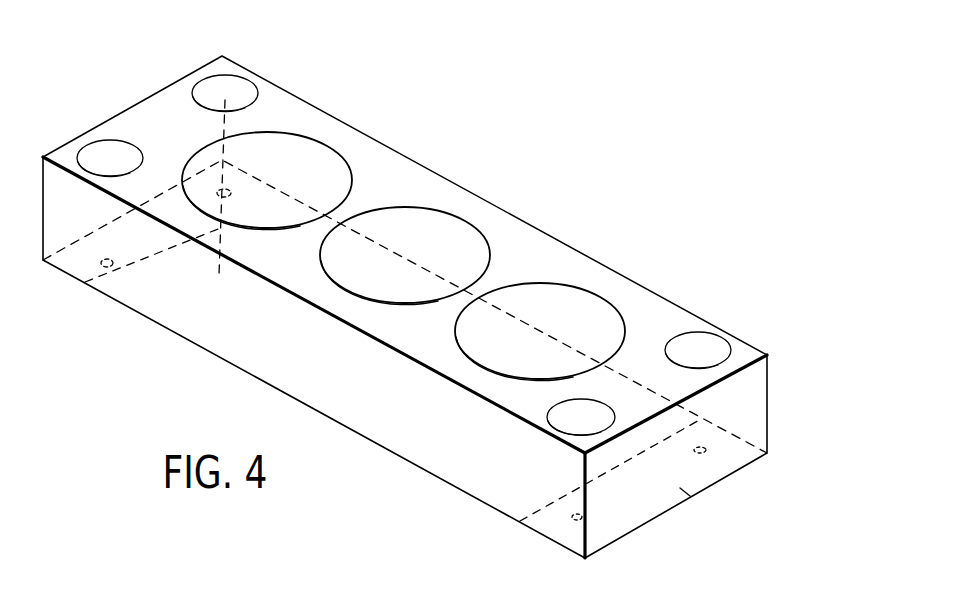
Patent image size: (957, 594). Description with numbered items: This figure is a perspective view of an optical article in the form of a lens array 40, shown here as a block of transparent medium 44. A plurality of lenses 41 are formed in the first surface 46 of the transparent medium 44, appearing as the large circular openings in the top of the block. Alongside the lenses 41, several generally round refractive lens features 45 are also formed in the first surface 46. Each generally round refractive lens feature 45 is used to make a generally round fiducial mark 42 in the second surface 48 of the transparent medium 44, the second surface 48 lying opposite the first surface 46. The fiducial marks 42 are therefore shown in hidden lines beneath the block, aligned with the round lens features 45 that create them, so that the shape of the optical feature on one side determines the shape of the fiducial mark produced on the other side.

The lens array 40 is at (457, 135).
The lenses 41 is at (300, 140).
The generally round fiducial mark 42 is at (82, 282).
The transparent medium 44 is at (760, 395).
The generally round refractive lens feature 45 is at (100, 147).
The first surface 46 is at (670, 308).
The second surface 48 is at (680, 488).